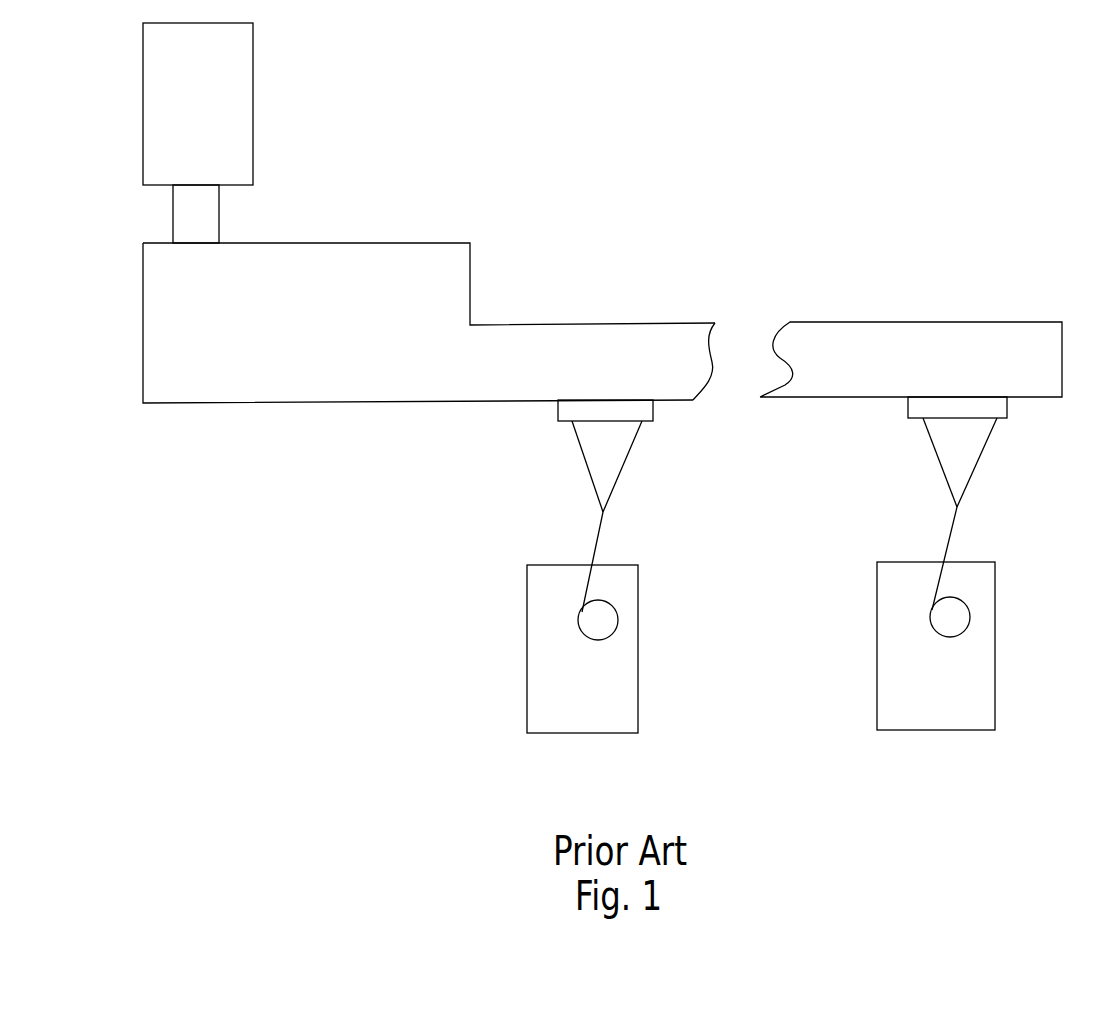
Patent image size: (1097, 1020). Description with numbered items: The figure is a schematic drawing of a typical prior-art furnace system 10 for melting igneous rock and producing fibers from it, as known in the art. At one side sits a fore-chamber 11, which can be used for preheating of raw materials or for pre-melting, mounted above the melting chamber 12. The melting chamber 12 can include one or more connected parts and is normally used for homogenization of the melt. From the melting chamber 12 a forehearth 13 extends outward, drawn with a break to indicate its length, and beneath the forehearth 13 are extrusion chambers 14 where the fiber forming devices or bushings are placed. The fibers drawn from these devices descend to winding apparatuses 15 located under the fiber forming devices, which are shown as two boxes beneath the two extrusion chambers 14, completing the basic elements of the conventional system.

The furnace system 10 is at (667, 110).
The fore-chamber 11 is at (216, 114).
The melting chamber 12 is at (322, 363).
The forehearth 13 is at (602, 352).
The extrusion chambers 14 is at (923, 418).
The winding apparatuses 15 is at (928, 685).